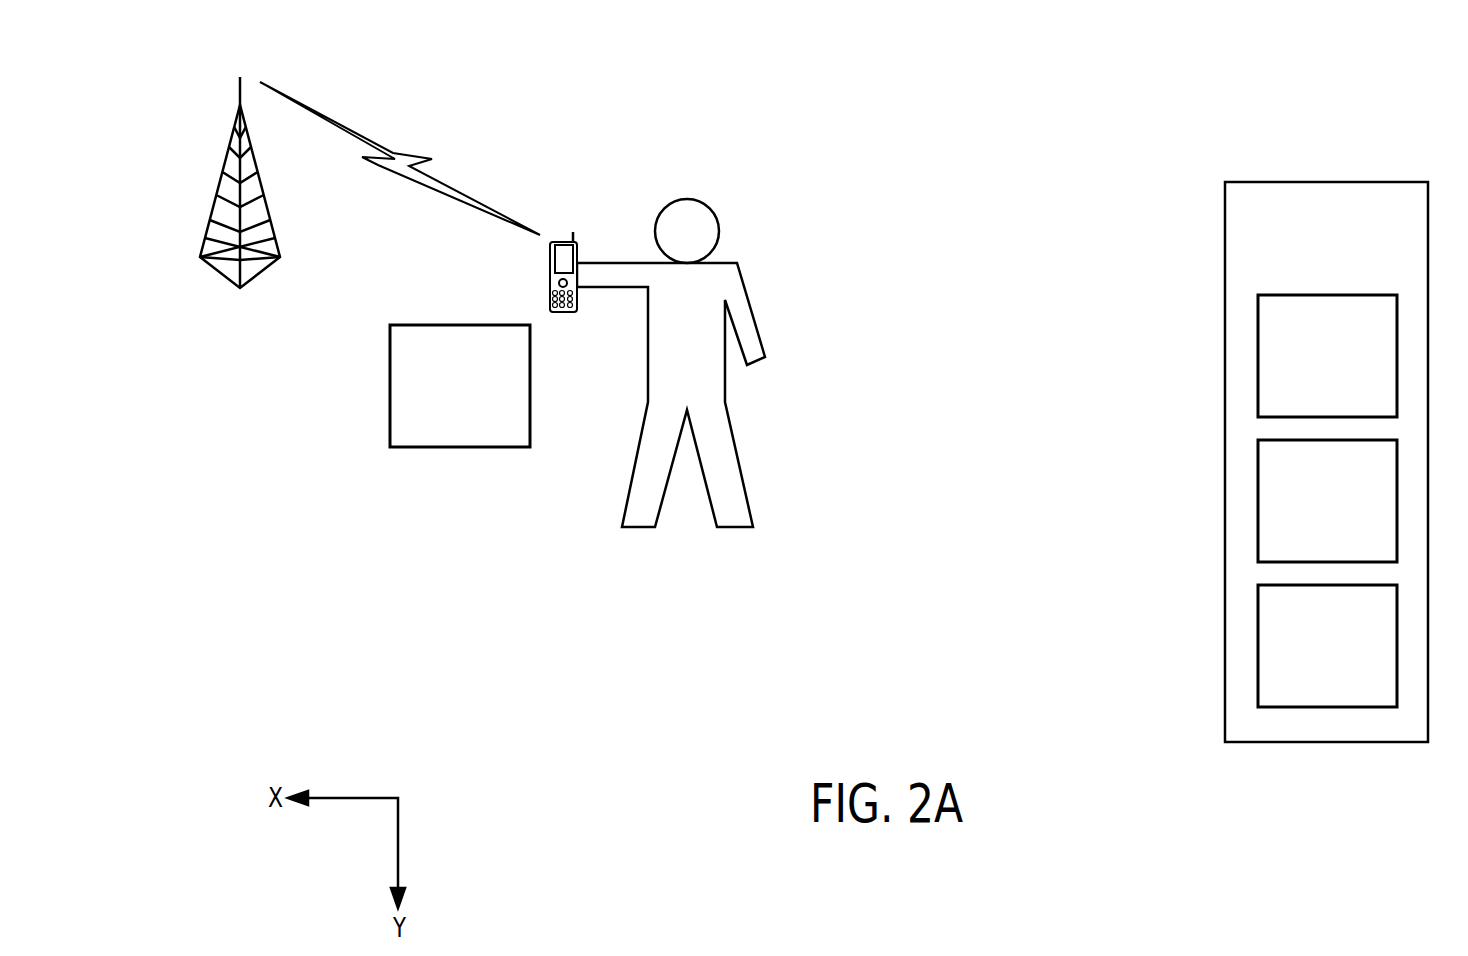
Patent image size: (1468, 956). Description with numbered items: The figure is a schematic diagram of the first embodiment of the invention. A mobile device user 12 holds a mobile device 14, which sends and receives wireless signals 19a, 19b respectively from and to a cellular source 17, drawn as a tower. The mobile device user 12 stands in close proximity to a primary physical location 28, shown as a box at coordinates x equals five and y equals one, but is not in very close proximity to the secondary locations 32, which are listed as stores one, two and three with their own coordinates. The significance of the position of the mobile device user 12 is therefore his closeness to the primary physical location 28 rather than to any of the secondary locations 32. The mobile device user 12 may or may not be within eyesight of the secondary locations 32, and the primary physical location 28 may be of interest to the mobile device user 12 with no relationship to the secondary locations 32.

The mobile device user 12 is at (705, 198).
The mobile device 14 is at (550, 281).
The cellular source 17 is at (212, 197).
The wireless signal 19a is at (403, 158).
The wireless signal 19b is at (398, 142).
The primary physical location 28 is at (390, 392).
The secondary locations 32 is at (1220, 338).